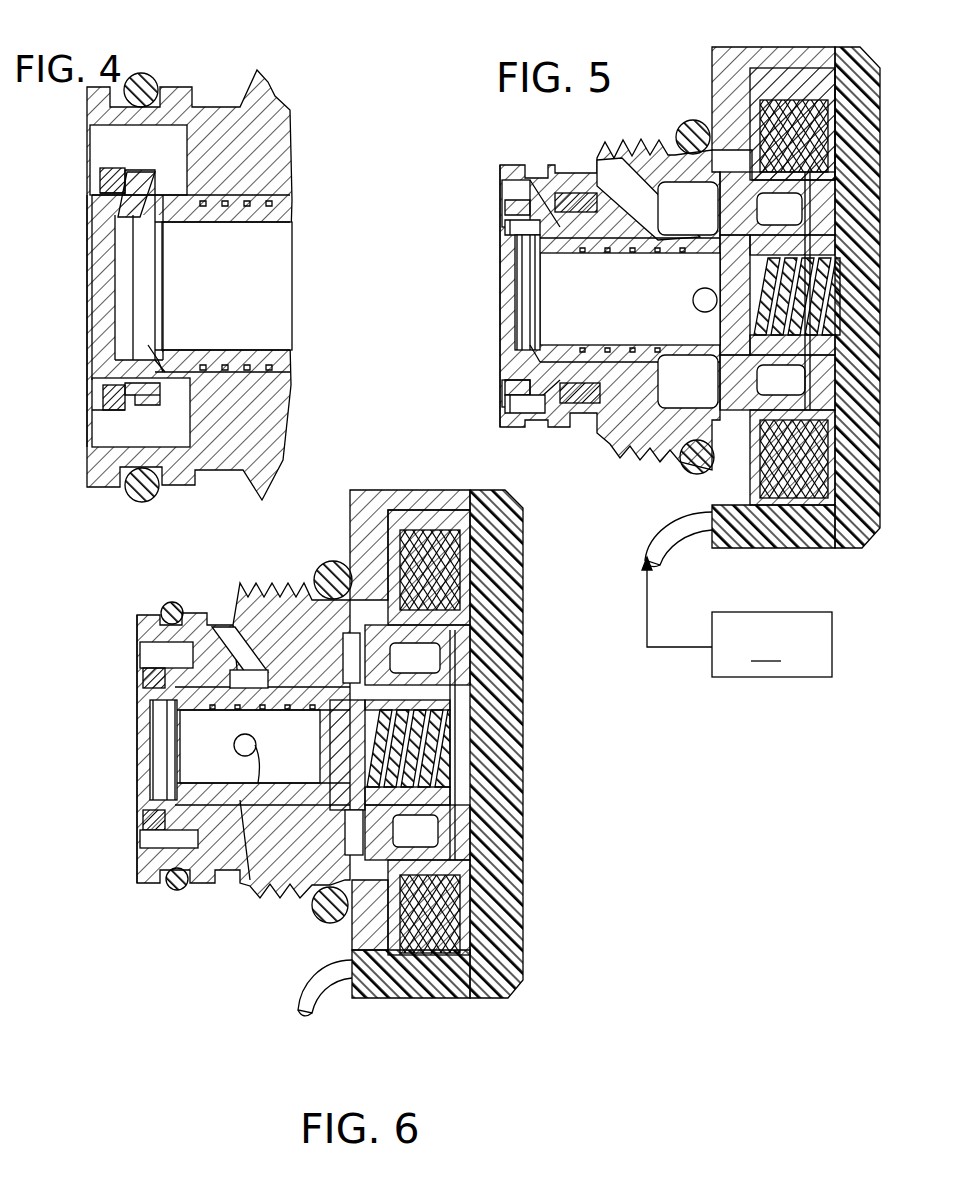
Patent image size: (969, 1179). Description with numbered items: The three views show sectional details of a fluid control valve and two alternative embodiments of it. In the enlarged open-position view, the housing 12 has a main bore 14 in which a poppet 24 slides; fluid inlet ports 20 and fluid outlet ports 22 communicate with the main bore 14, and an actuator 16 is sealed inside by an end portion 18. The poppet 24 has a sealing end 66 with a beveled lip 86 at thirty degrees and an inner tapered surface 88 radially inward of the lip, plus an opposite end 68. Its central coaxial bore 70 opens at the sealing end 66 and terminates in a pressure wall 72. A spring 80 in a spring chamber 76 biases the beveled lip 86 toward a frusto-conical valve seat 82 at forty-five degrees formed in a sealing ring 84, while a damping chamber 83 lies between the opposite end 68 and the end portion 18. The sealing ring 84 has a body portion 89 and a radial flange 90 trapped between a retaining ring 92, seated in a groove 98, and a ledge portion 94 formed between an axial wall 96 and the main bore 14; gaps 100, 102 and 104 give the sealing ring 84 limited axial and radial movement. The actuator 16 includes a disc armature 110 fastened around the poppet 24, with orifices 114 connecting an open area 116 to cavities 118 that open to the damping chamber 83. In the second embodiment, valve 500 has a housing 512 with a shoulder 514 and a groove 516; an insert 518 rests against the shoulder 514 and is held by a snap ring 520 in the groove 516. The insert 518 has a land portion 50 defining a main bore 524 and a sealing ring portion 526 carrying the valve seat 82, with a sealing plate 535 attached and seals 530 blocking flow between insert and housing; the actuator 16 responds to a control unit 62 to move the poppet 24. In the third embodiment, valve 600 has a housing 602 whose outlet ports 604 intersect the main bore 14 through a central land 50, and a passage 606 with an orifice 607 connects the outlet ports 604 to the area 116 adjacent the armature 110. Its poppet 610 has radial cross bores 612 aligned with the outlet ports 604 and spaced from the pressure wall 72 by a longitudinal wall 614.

In FIG. 4, the housing 12 is at (275, 130).
In FIG. 4, the main bore 14 is at (241, 352).
In FIG. 6, the main bore 14 is at (268, 885).
In FIG. 5, the actuator 16 is at (835, 55).
In FIG. 6, the actuator 16 is at (430, 985).
In FIG. 6, the end portion 18 is at (528, 912).
In FIG. 4, the fluid inlet ports 20 is at (90, 132).
In FIG. 6, the fluid inlet ports 20 is at (140, 650).
In FIG. 5, the fluid outlet ports 22 is at (540, 205).
In FIG. 5, the poppet 24 is at (595, 255).
In FIG. 5, the land portion 50 is at (572, 245).
In FIG. 6, the land portion 50 is at (298, 900).
In FIG. 5, the control unit 62 is at (737, 617).
In FIG. 6, the sealing end 66 is at (186, 785).
In FIG. 6, the opposite end 68 is at (440, 795).
In FIG. 6, the central coaxial bore 70 is at (190, 715).
In FIG. 5, the pressure wall 72 is at (722, 325).
In FIG. 6, the pressure wall 72 is at (332, 745).
In FIG. 5, the spring chamber 76 is at (797, 296).
In FIG. 6, the spring chamber 76 is at (440, 775).
In FIG. 6, the spring 80 is at (420, 758).
In FIG. 4, the valve seat 82 is at (145, 238).
In FIG. 5, the valve seat 82 is at (530, 265).
In FIG. 6, the valve seat 82 is at (153, 790).
In FIG. 6, the damping chamber 83 is at (455, 680).
In FIG. 4, the sealing ring 84 is at (95, 335).
In FIG. 6, the sealing ring 84 is at (137, 755).
In FIG. 4, the beveled lip 86 is at (150, 360).
In FIG. 5, the beveled lip 86 is at (530, 356).
In FIG. 6, the beveled lip 86 is at (165, 690).
In FIG. 4, the inner tapered surface 88 is at (160, 352).
In FIG. 4, the body portion 89 is at (100, 284).
In FIG. 4, the radial flange 90 is at (140, 175).
In FIG. 4, the retaining ring 92 is at (103, 390).
In FIG. 4, the ledge portion 94 is at (145, 400).
In FIG. 4, the axial wall 96 is at (130, 405).
In FIG. 4, the groove 98 is at (110, 410).
In FIG. 4, the gap 100 is at (132, 170).
In FIG. 4, the gap 102 is at (110, 197).
In FIG. 4, the gap 104 is at (112, 180).
In FIG. 5, the disc armature 110 is at (718, 490).
In FIG. 6, the disc armature 110 is at (360, 560).
In FIG. 5, the orifices 114 is at (740, 380).
In FIG. 6, the orifices 114 is at (375, 655).
In FIG. 5, the open area 116 is at (708, 220).
In FIG. 6, the open area 116 is at (350, 640).
In FIG. 5, the cavities 118 is at (740, 212).
In FIG. 6, the cavities 118 is at (440, 655).
In FIG. 5, the valve 500 is at (728, 45).
In FIG. 5, the housing 512 is at (712, 72).
In FIG. 5, the shoulder 514 is at (600, 430).
In FIG. 5, the groove 516 is at (520, 405).
In FIG. 5, the insert 518 is at (505, 208).
In FIG. 5, the snap ring 520 is at (515, 392).
In FIG. 5, the main bore 524 is at (644, 255).
In FIG. 5, the sealing ring portion 526 is at (510, 232).
In FIG. 5, the seals 530 is at (575, 205).
In FIG. 5, the sealing plate 535 is at (505, 320).
In FIG. 6, the valve 600 is at (524, 952).
In FIG. 6, the housing 602 is at (258, 905).
In FIG. 6, the outlet ports 604 is at (233, 622).
In FIG. 6, the passage 606 is at (260, 605).
In FIG. 6, the orifice 607 is at (248, 652).
In FIG. 6, the poppet 610 is at (445, 705).
In FIG. 6, the radial cross bores 612 is at (258, 720).
In FIG. 6, the longitudinal wall 614 is at (300, 790).